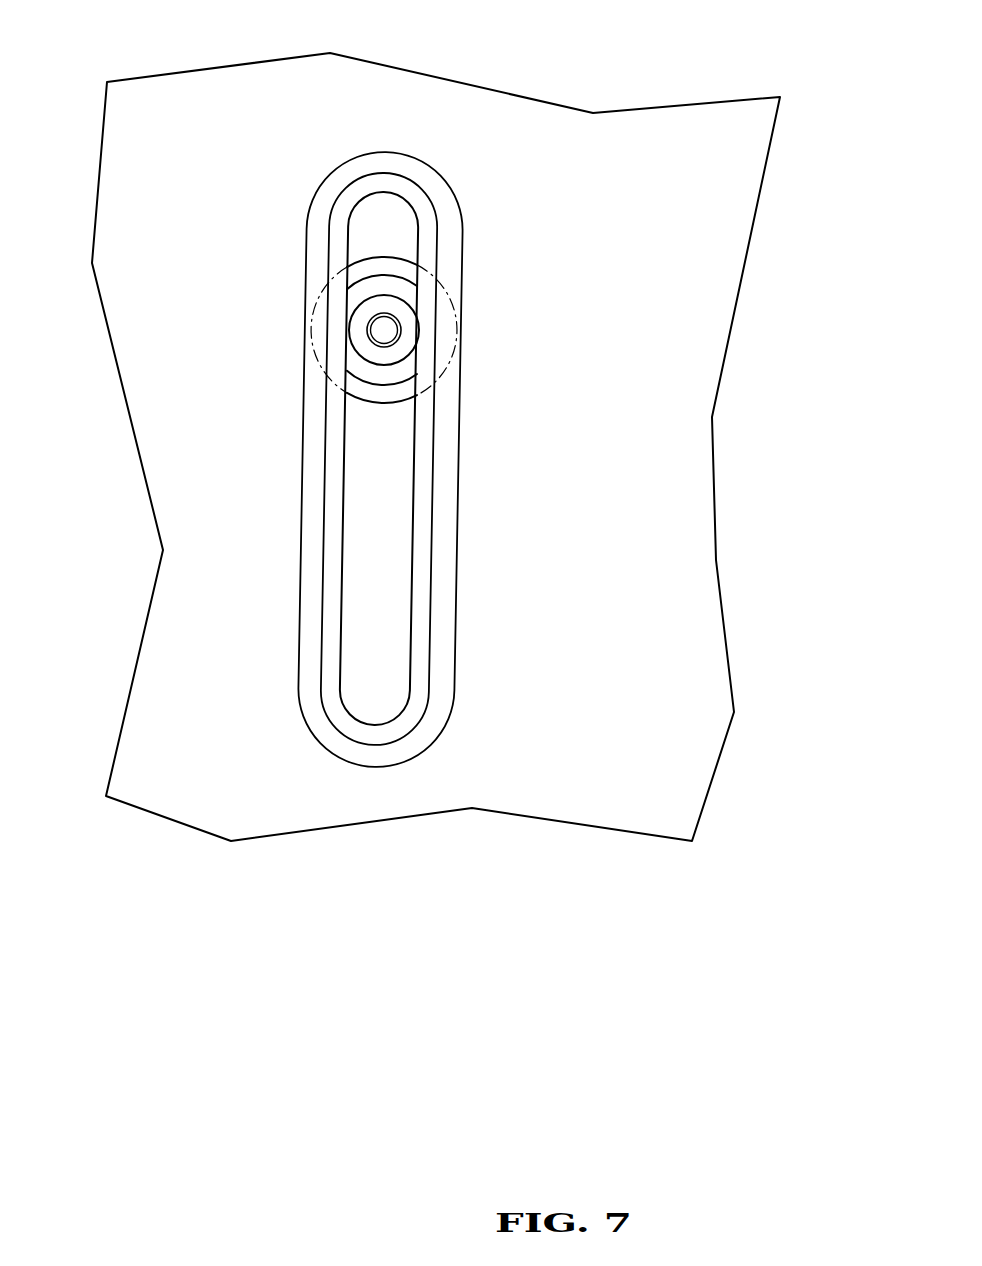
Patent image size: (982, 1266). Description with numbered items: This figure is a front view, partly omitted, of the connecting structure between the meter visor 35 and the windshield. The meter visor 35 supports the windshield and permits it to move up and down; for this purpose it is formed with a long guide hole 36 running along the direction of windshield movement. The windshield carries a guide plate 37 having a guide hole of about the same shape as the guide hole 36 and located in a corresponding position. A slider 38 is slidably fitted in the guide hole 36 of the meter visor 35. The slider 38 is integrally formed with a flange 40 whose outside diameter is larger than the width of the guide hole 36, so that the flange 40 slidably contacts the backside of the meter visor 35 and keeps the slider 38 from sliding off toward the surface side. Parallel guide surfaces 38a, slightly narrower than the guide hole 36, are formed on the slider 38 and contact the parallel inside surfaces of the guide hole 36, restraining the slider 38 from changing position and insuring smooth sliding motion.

The meter visor 35 is at (663, 405).
The guide hole 36 is at (388, 208).
The guide plate 37 is at (465, 243).
The slider 38 is at (406, 376).
The guide surface 38a is at (522, 388).
The flange 40 is at (384, 402).